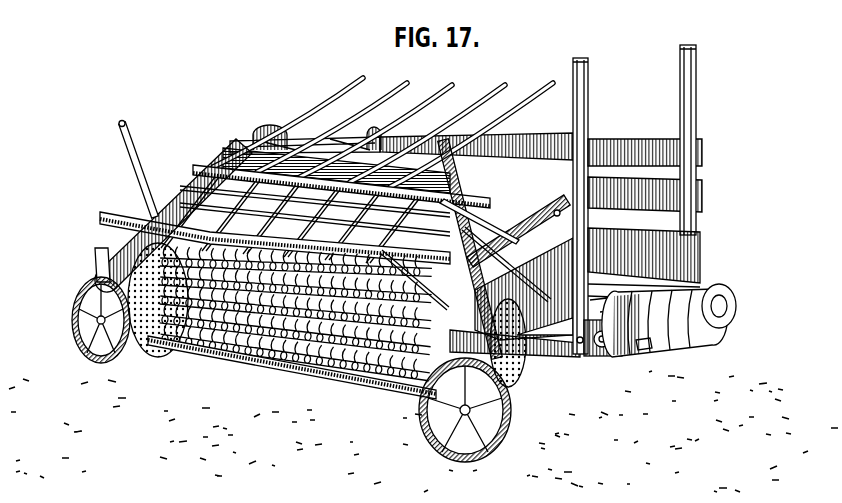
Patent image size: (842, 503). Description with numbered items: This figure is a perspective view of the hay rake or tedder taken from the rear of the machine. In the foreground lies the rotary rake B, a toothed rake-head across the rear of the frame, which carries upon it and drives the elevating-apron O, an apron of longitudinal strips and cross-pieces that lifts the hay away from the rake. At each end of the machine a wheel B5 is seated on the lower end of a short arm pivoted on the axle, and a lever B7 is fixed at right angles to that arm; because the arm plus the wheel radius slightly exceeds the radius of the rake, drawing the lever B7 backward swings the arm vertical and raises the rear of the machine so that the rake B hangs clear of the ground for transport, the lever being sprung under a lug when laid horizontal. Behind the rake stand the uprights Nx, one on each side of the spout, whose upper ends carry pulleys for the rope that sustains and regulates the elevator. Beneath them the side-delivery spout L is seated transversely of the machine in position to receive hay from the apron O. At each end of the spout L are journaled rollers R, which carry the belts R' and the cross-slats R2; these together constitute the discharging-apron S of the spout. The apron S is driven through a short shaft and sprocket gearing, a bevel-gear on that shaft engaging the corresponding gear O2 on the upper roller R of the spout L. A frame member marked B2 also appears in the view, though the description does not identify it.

The rotary rake B is at (165, 357).
The wheel B5 is at (62, 286).
The lever B7 is at (137, 156).
The side frame bar B2 is at (518, 231).
The elevating-apron O is at (289, 164).
The gear O2 is at (453, 88).
The uprights Nx is at (588, 101).
The side-delivery spout L is at (712, 279).
The rollers R is at (665, 330).
The belts R' is at (729, 320).
The cross-slats R2 is at (598, 312).
The discharging-apron S is at (643, 350).